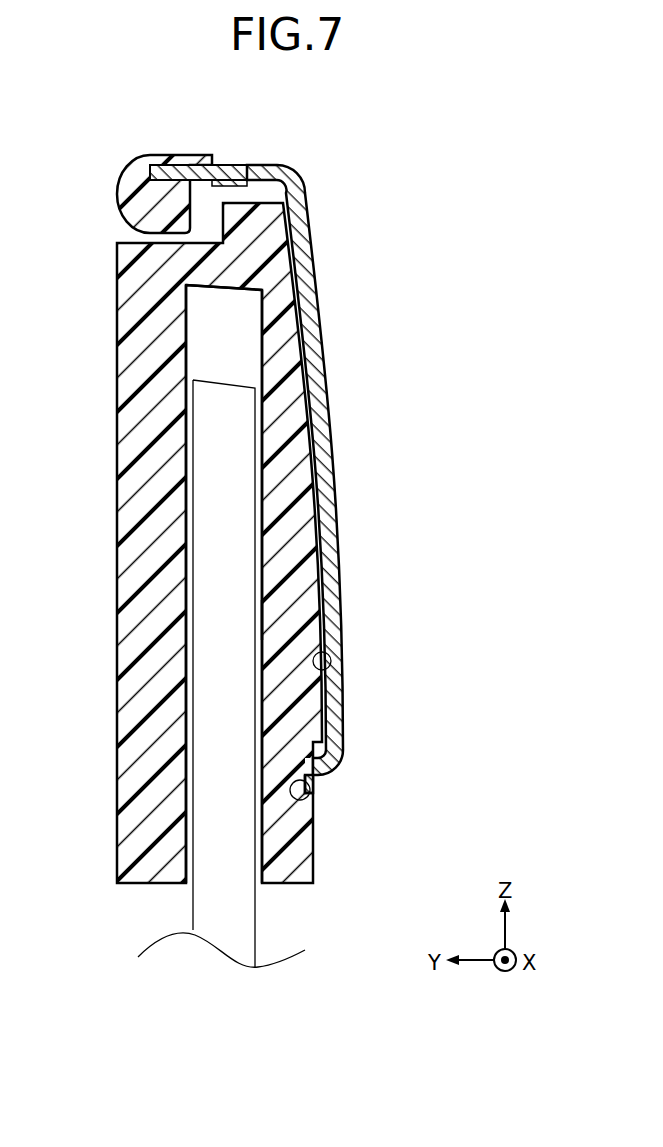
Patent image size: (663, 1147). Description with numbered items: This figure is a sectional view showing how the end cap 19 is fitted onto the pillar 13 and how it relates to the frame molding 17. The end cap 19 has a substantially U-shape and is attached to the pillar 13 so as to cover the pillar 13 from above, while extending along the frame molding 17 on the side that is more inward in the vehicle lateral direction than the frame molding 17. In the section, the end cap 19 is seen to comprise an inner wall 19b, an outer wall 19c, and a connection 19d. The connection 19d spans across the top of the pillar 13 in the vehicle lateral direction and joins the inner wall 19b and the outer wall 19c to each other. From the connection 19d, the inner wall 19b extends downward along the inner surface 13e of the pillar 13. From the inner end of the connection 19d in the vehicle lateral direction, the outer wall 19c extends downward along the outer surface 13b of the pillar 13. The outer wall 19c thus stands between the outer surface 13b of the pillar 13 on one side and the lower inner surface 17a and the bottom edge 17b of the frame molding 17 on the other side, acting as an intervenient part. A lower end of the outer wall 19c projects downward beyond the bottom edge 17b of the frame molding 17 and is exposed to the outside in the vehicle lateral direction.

The pillar 13 is at (262, 415).
The outer surface of the pillar 13b is at (257, 617).
The inner surface of the pillar 13e is at (193, 663).
The frame molding 17 is at (320, 286).
The inner surface of the frame molding 17a is at (331, 667).
The bottom edge of the frame molding 17b is at (310, 794).
The end cap 19 is at (228, 485).
The inner wall 19b is at (150, 562).
The outer wall 19c is at (298, 513).
The connection 19d is at (215, 267).